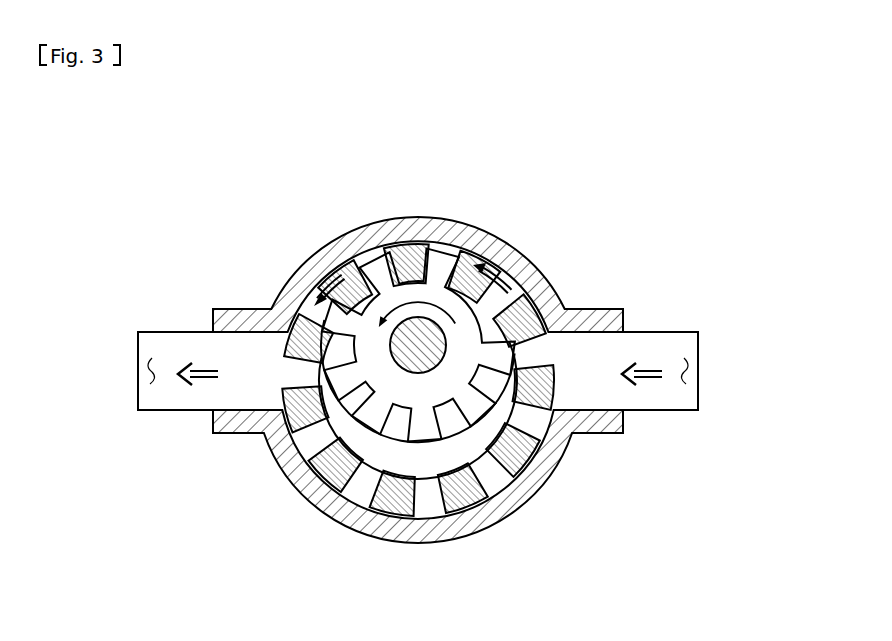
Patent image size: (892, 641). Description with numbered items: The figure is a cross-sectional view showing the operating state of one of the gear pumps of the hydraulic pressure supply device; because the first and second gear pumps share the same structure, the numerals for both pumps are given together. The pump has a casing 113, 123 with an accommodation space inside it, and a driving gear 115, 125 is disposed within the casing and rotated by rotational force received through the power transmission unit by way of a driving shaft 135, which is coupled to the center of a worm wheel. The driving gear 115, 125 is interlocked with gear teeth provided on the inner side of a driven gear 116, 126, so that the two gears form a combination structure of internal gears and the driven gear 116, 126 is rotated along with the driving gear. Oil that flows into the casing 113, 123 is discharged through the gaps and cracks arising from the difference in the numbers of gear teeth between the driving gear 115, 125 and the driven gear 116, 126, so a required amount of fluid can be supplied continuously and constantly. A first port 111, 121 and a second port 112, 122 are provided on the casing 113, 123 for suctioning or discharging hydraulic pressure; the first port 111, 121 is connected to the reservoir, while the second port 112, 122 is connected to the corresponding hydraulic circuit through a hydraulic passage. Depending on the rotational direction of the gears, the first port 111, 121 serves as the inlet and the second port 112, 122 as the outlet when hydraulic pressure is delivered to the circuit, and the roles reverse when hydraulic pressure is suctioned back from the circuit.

The first port 111 is at (713, 385).
The first port 121 is at (690, 372).
The second port 112 is at (129, 385).
The second port 122 is at (148, 372).
The casing 113 is at (418, 334).
The casing 123 is at (428, 222).
The driving gear 115 is at (466, 405).
The driving gear 125 is at (457, 371).
The driven gear 116 is at (399, 417).
The driven gear 126 is at (323, 472).
The driving shaft 135 is at (417, 366).